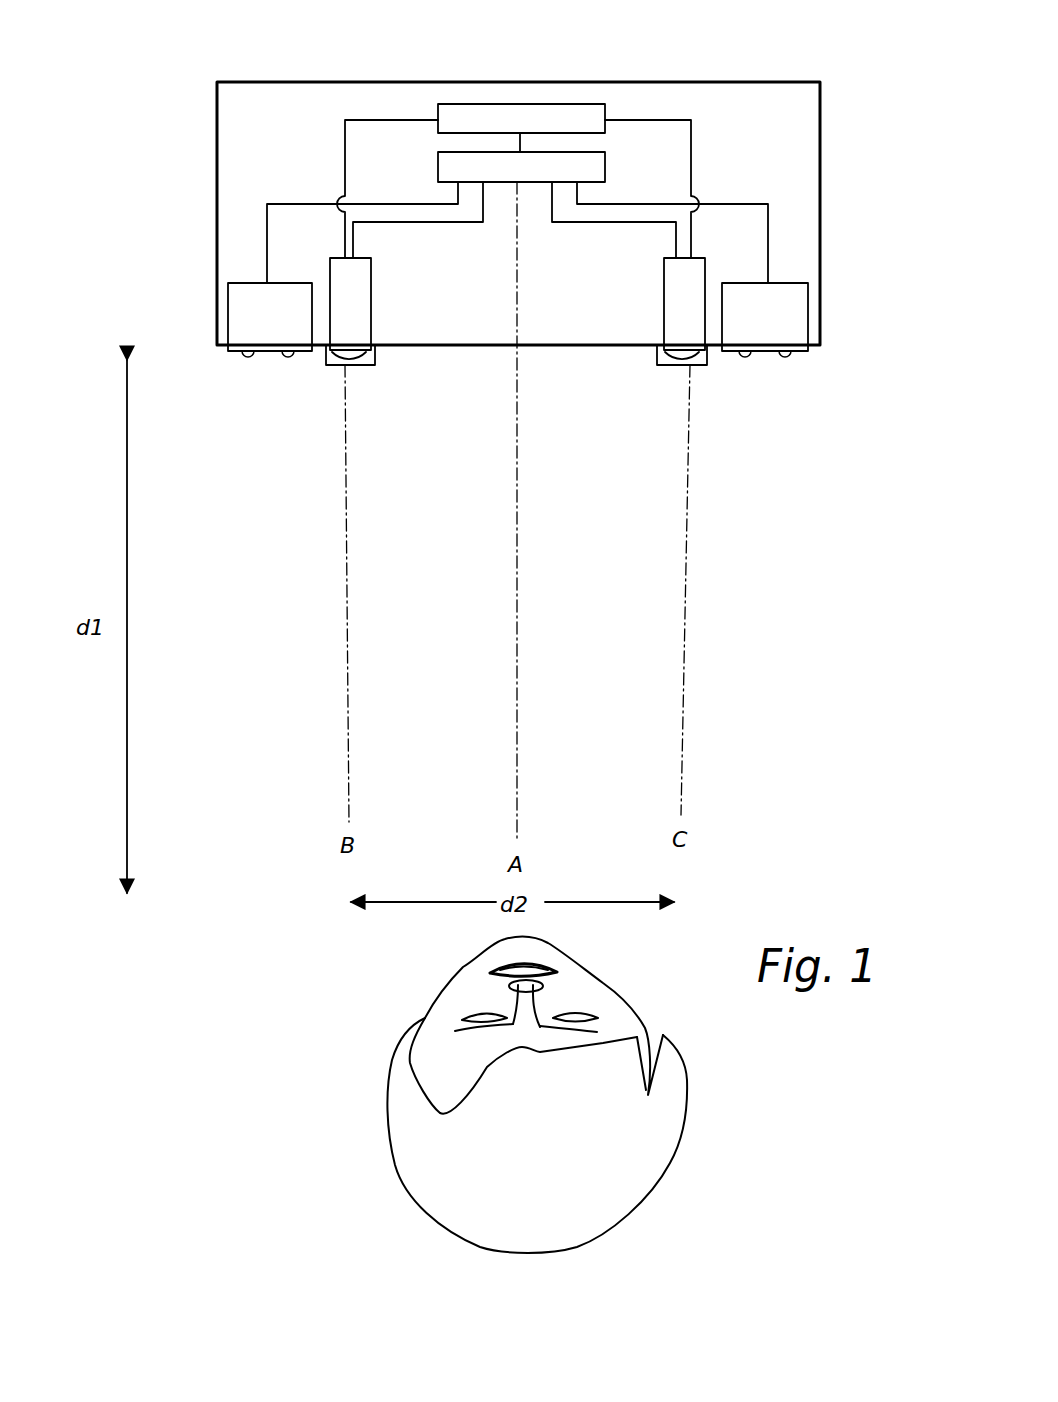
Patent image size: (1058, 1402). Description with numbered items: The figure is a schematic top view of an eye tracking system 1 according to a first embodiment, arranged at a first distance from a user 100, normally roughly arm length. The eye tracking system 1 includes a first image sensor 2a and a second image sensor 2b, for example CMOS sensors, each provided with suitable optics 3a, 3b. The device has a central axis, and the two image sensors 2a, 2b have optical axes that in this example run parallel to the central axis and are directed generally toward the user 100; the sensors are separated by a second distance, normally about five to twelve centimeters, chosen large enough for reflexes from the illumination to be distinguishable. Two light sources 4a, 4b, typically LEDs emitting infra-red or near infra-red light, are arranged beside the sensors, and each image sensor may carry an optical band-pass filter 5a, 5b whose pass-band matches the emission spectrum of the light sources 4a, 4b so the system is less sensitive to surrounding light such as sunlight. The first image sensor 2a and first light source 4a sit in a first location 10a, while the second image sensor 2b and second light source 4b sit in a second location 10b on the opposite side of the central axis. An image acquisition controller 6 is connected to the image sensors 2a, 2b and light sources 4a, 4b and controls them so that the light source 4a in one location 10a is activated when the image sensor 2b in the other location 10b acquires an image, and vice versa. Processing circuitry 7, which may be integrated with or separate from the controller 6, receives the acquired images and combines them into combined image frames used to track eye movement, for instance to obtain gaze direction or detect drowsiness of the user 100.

The eye tracking system 1 is at (505, 369).
The first image sensor 2a is at (360, 293).
The second image sensor 2b is at (672, 302).
The first optics 3a is at (325, 396).
The second optics 3b is at (673, 352).
The first light source 4a is at (250, 357).
The second light source 4b is at (745, 357).
The first optical band-pass filter 5a is at (371, 366).
The second optical band-pass filter 5b is at (700, 366).
The image acquisition controller 6 is at (595, 165).
The processing circuitry 7 is at (462, 115).
The first location 10a is at (305, 398).
The second location 10b is at (712, 408).
The user 100 is at (412, 1130).